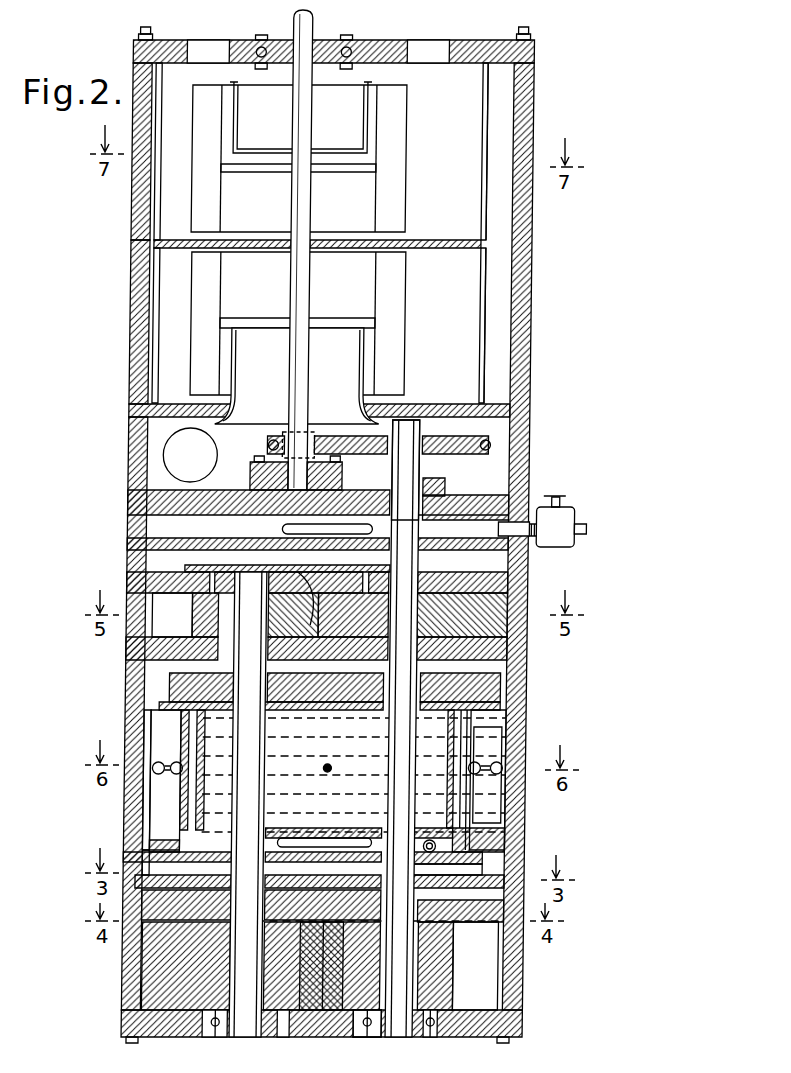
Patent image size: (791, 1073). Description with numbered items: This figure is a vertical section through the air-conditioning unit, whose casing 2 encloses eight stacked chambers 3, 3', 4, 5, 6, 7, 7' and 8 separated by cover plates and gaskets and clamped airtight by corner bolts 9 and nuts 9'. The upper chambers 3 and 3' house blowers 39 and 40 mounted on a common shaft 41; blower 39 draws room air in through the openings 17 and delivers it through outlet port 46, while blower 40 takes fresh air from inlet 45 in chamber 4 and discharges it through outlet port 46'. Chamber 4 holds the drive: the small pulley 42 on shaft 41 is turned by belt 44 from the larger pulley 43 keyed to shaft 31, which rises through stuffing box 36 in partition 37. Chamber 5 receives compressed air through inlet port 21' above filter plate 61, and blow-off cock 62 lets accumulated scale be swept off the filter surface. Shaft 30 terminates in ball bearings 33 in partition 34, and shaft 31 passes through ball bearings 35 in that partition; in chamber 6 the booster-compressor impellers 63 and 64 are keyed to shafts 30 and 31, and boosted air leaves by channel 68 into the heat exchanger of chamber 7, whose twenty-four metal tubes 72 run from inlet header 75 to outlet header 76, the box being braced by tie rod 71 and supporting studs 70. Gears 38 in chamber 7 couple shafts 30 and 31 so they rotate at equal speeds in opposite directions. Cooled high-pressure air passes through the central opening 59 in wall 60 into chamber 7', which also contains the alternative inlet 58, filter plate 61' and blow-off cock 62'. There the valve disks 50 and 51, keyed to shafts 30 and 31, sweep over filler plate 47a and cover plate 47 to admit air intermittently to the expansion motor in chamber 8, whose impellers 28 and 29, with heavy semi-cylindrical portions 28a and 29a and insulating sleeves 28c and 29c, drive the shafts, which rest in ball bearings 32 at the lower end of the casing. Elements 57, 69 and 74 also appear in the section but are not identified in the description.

The casing 2 is at (535, 284).
The chamber 3 is at (138, 151).
The chamber 3' is at (135, 322).
The chamber 4 is at (162, 422).
The chamber 5 is at (145, 546).
The chamber 6 is at (142, 645).
The chamber 7 is at (122, 780).
The chamber 7' is at (129, 846).
The chamber 8 is at (176, 964).
The bolts 9 is at (322, 539).
The nuts 9' is at (333, 37).
The openings 17 is at (203, 50).
The air inlet port 21' is at (298, 525).
The impeller 28 is at (190, 1018).
The semi-cylindrical portion 28a is at (346, 1000).
The sleeve 28c is at (279, 1030).
The impeller 29 is at (361, 1040).
The semi-cylindrical portion 29a is at (478, 960).
The sleeve 29c is at (455, 985).
The shaft 30 is at (257, 1012).
The shaft 31 is at (412, 1030).
The ball bearings 32 is at (291, 1030).
The ball bearings 33 is at (232, 570).
The partition 34 is at (150, 580).
The ball bearings 35 is at (516, 586).
The stuffing box 36 is at (440, 483).
The partition 37 is at (527, 519).
The gears 38 is at (178, 690).
The blower 39 is at (332, 203).
The blower 40 is at (331, 283).
The shaft 41 is at (314, 305).
The pulley 42 is at (272, 446).
The pulley 43 is at (421, 428).
The belt 44 is at (497, 446).
The inlet 45 is at (186, 466).
The outlet port 46 is at (326, 39).
The outlet port 46' is at (454, 233).
The cover plate 47 is at (162, 908).
The filler plate 47a is at (140, 893).
The valve disk 50 is at (180, 857).
The valve disk 51 is at (510, 879).
The bore 57 is at (440, 840).
The air inlet port 58 is at (368, 840).
The central opening 59 is at (345, 839).
The wall 60 is at (495, 845).
The filter plate 61 is at (298, 528).
The filter plate 61' is at (447, 877).
The blow-off cock 62 is at (570, 519).
The blow-off cock 62' is at (486, 847).
The impeller 63 is at (195, 611).
The impeller 64 is at (495, 615).
The channel 68 is at (306, 580).
The tube 69 is at (478, 746).
The supporting stud 70 is at (500, 763).
The tie rod 71 is at (341, 768).
The metal tubes 72 is at (196, 740).
The rod 74 is at (463, 730).
The inlet header 75 is at (498, 812).
The outlet header 76 is at (150, 806).